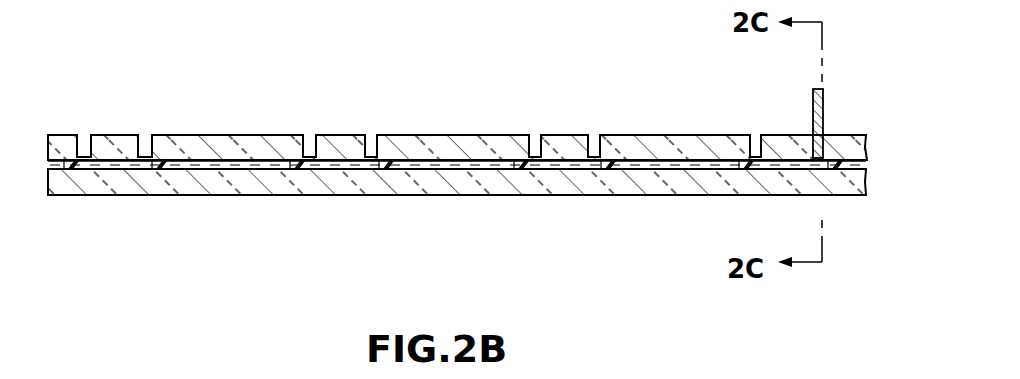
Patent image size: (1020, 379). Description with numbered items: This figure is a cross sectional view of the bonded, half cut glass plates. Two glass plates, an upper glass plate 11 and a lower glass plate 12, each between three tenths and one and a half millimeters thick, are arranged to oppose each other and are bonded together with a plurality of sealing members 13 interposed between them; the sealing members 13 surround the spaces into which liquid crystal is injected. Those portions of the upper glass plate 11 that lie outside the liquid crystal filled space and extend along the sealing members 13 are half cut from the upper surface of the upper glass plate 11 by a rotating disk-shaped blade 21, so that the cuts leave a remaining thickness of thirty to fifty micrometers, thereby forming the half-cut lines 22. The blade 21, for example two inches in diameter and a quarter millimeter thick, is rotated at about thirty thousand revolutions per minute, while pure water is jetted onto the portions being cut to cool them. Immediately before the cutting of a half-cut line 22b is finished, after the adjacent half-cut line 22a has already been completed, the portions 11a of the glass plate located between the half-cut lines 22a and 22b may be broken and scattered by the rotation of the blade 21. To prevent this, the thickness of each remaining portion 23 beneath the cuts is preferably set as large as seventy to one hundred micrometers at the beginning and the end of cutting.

The upper glass plate 11 is at (72, 126).
The portions of the glass plate located between the half-cut lines 11a is at (118, 137).
The lower glass plate 12 is at (69, 206).
The sealing members 13 is at (70, 172).
The rotating disk-shaped blade 21 is at (826, 96).
The half-cut lines 22 is at (84, 136).
The half-cut line 22a is at (534, 136).
The half-cut line 22b is at (595, 136).
The remaining portion 23 is at (158, 172).